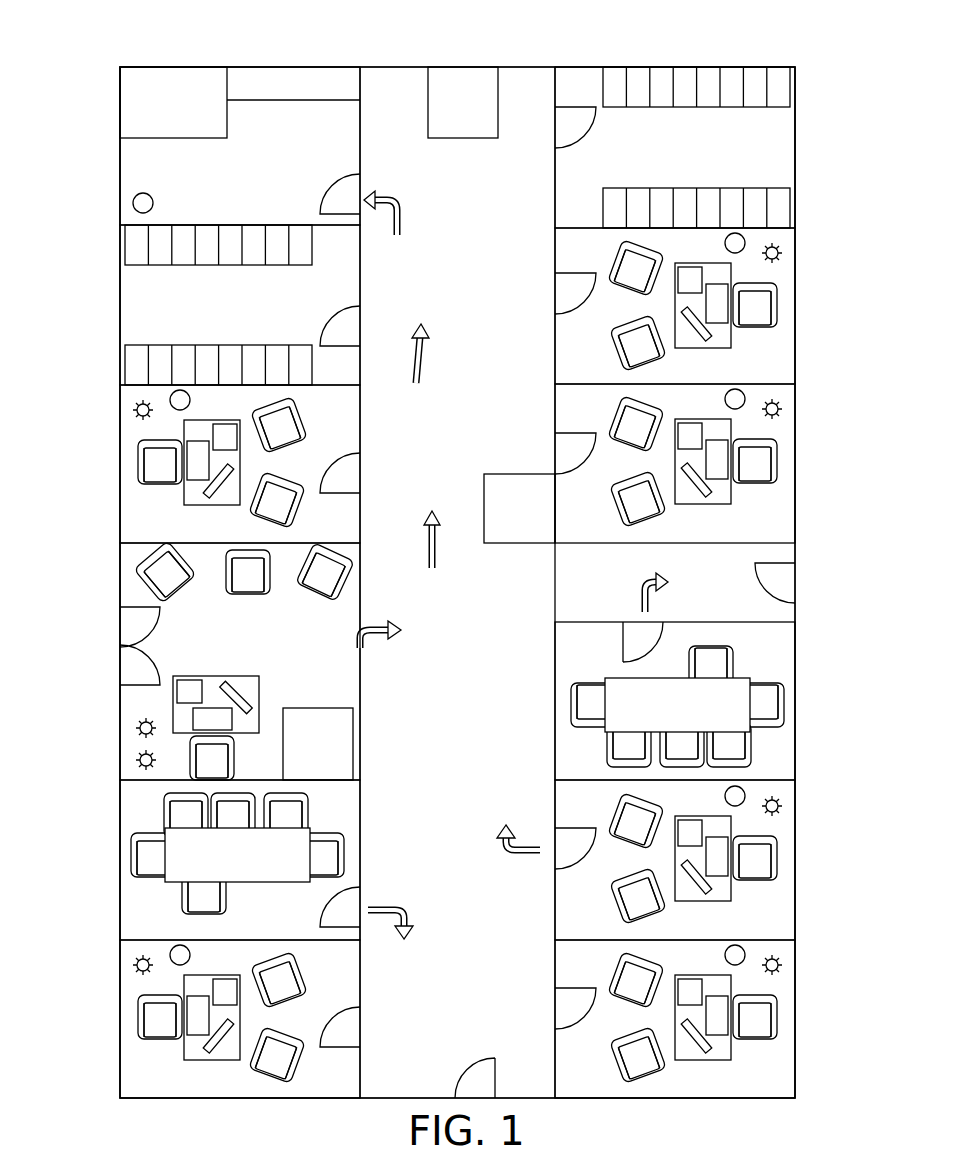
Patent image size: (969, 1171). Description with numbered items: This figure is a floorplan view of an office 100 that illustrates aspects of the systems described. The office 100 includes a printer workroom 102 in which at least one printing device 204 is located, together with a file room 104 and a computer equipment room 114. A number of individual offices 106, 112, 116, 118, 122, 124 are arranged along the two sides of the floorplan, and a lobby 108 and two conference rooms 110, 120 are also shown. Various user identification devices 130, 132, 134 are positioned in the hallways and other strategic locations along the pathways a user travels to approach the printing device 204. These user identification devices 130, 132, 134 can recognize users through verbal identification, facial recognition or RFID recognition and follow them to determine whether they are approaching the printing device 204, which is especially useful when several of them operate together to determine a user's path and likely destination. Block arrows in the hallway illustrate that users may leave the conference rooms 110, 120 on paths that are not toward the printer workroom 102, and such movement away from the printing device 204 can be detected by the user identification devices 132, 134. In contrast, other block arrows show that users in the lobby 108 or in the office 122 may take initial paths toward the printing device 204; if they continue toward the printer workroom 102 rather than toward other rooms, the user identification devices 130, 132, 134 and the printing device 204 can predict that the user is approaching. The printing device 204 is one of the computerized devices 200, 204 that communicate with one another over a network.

The office 100 is at (120, 578).
The printer workroom 102 is at (158, 178).
The file room 104 is at (155, 318).
The office 106 is at (155, 510).
The lobby 108 is at (178, 643).
The conference room 110 is at (155, 915).
The office 112 is at (155, 1072).
The computer equipment room 114 is at (762, 143).
The office 116 is at (762, 263).
The office 118 is at (762, 423).
The conference room 120 is at (762, 666).
The office 122 is at (762, 811).
The office 124 is at (762, 976).
The user identification device 130 is at (443, 76).
The user identification device 132 is at (495, 477).
The user identification device 134 is at (353, 728).
The computerized device 200 is at (685, 67).
The printing device 204 is at (120, 100).